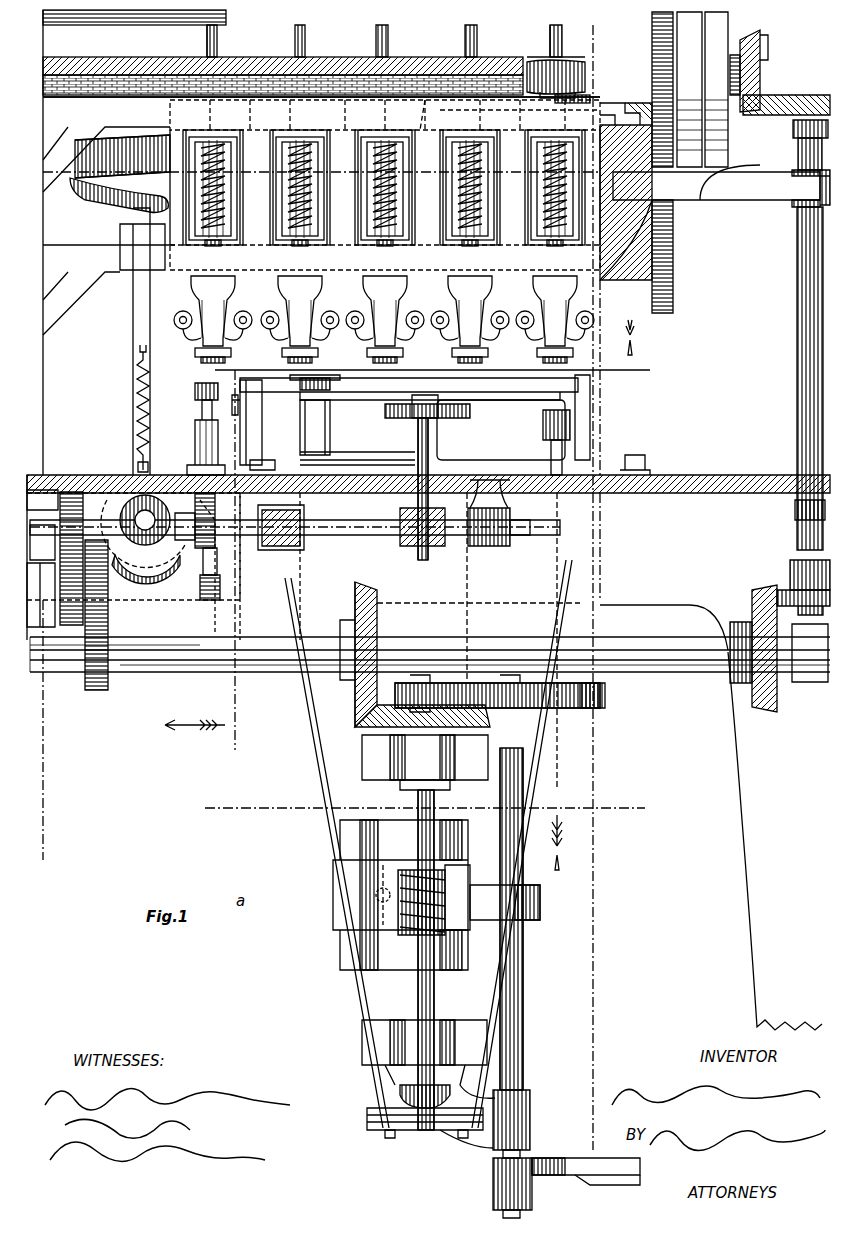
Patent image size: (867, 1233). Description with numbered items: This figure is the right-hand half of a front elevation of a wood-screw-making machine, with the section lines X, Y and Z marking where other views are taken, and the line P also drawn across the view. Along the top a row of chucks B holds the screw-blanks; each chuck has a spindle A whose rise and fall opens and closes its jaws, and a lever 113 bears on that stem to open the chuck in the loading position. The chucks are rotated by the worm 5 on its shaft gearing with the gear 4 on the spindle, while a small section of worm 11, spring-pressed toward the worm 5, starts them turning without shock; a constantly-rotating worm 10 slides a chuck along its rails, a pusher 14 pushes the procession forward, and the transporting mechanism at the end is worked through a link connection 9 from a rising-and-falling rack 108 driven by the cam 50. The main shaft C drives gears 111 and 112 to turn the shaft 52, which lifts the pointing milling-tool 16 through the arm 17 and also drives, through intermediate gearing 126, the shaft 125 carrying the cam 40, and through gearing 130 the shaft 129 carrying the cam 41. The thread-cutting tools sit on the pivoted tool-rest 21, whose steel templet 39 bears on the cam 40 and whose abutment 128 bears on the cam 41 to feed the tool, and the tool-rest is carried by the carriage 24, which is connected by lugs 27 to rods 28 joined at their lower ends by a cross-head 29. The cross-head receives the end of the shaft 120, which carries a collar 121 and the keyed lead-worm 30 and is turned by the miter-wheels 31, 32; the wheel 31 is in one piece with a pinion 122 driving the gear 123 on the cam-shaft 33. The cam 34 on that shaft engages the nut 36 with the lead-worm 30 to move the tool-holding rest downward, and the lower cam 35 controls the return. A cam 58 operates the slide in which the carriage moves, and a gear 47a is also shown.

The gear 4 is at (538, 60).
The worm 5 is at (320, 57).
The link connection 9 is at (579, 90).
The constantly-rotating worm 10 is at (115, 135).
The small section of worm 11 is at (80, 55).
The pusher 14 is at (118, 205).
The milling-tool 16 is at (194, 398).
The arm 17 is at (220, 590).
The tool-rest or carrier-bar 21 is at (497, 380).
The carriage 24 is at (470, 465).
The lugs 27 is at (543, 430).
The rods 28 is at (310, 748).
The cross-head 29 is at (425, 1115).
The lead-worm 30 is at (410, 930).
The miter-wheel 31 is at (362, 740).
The miter-wheel 32 is at (343, 702).
The cam-shaft 33 is at (523, 1060).
The cam 34 is at (540, 903).
The cam 35 is at (585, 1185).
The nut 36 is at (465, 870).
The steel templet 39 is at (424, 395).
The cam 40 is at (385, 412).
The cam 41 is at (247, 395).
The gear 47a is at (215, 520).
The cam 50 is at (165, 570).
The shaft 52 is at (217, 560).
The cam 58 is at (211, 602).
The rising-and-falling rack 108 is at (138, 325).
The gear 111 is at (72, 540).
The gear 112 is at (110, 620).
The lever 113 is at (190, 17).
The shaft 120 is at (418, 993).
The collar 121 is at (400, 1100).
The pinion 122 is at (465, 650).
The gear 123 is at (605, 695).
The shaft 125 is at (418, 435).
The intermediate gearing 126 is at (420, 546).
The abutment 128 is at (275, 375).
The shaft 129 is at (300, 500).
The gearing 130 is at (285, 546).
The spindle A is at (218, 35).
The chucks B is at (384, 319).
The main shaft C is at (430, 670).
The section line P is at (237, 547).
The section line x x X is at (589, 587).
The section line y y Y is at (428, 808).
The section line Z Z is at (433, 363).